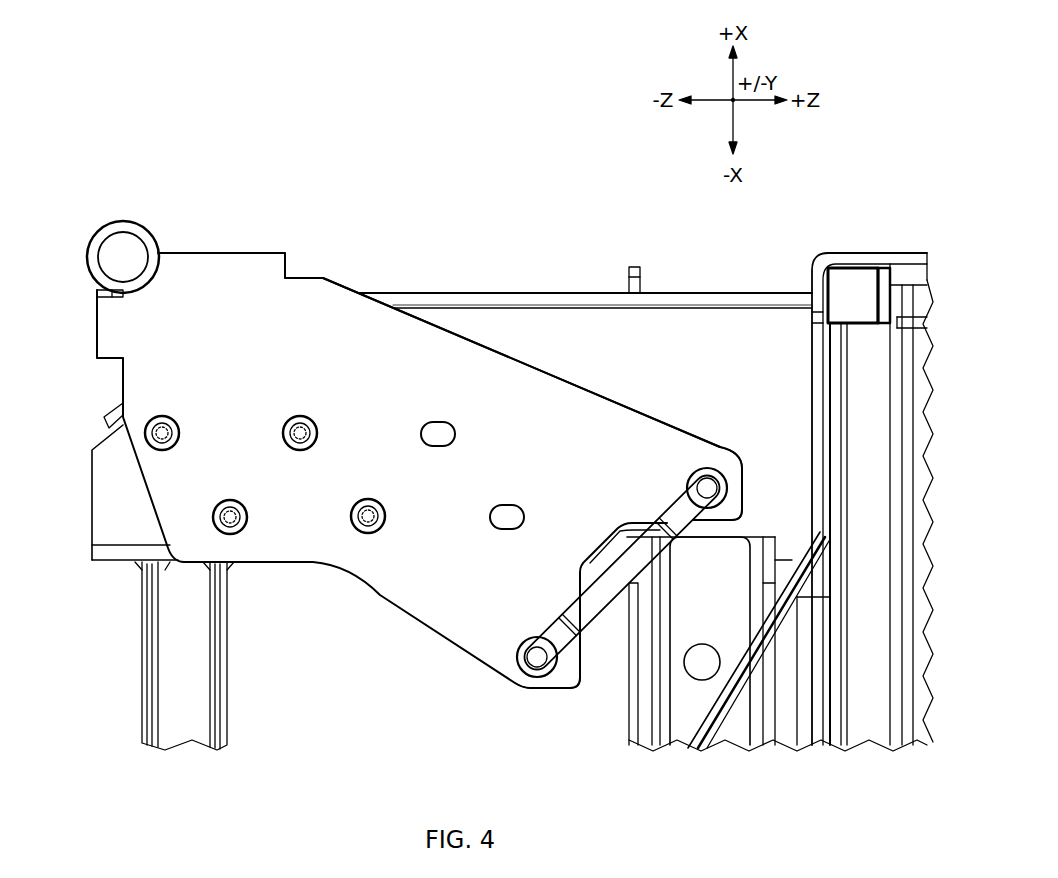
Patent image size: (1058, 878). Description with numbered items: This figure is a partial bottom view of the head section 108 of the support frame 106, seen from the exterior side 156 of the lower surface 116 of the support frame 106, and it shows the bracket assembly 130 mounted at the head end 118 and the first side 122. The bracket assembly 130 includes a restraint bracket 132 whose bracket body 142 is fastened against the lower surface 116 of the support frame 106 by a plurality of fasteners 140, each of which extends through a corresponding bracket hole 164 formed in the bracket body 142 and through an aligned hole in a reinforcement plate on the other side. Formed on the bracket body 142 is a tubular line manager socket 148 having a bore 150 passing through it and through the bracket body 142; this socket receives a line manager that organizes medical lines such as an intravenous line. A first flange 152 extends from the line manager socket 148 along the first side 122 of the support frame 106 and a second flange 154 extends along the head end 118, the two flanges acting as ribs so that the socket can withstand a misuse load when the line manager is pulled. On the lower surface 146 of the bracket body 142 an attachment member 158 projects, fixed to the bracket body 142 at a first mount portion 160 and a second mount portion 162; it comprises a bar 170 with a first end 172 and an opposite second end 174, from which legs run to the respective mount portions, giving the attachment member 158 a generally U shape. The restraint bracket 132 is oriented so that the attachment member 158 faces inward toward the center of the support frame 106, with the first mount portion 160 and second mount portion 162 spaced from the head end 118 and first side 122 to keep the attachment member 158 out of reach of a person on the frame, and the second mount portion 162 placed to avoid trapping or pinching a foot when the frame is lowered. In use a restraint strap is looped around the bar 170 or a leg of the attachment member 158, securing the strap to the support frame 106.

The support frame 106 is at (753, 770).
The head section 108 is at (791, 242).
The lower surface 116 is at (524, 293).
The head end 118 is at (413, 293).
The first side 122 is at (142, 632).
The bracket assembly 130 is at (240, 130).
The restraint bracket 132 is at (74, 321).
The fastener 140 is at (164, 425).
The bracket body 142 is at (632, 395).
The lower surface 146 is at (500, 378).
The line manager socket 148 is at (122, 221).
The bore 150 is at (134, 247).
The first flange 152 is at (97, 355).
The second flange 154 is at (270, 253).
The exterior side 156 is at (770, 321).
The attachment member 158 is at (601, 652).
The first mount portion 160 is at (534, 638).
The second mount portion 162 is at (687, 482).
The bracket hole 164 is at (298, 418).
The bar 170 is at (592, 586).
The first end 172 is at (532, 670).
The second end 174 is at (712, 480).